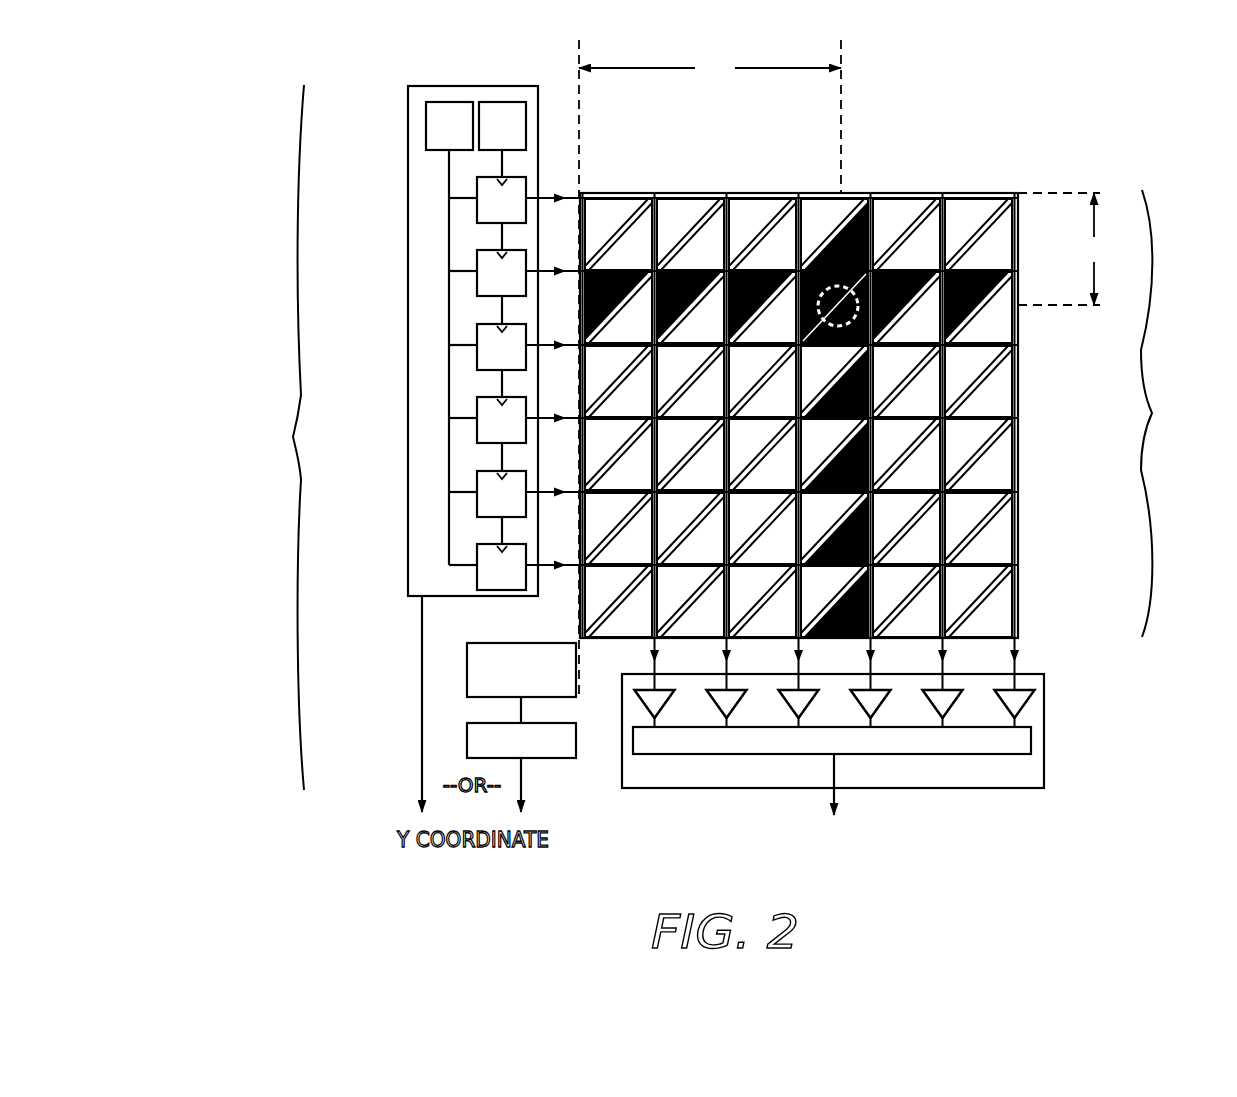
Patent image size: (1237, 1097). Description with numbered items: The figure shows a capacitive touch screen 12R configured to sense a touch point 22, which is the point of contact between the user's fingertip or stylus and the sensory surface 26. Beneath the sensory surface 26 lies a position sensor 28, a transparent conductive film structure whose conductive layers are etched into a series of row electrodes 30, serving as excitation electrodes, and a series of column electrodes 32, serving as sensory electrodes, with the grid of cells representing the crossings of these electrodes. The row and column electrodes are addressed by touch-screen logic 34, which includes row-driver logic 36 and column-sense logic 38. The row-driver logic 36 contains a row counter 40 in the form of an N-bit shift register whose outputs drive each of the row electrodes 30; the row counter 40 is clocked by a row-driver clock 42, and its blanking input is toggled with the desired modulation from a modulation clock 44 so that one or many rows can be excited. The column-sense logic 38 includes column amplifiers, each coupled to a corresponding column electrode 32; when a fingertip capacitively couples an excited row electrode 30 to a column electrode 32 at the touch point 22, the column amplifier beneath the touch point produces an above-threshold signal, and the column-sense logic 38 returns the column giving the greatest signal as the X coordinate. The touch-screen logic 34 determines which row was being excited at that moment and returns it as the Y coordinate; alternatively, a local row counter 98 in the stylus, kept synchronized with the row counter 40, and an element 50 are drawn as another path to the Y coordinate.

The touch screen 12R is at (863, 357).
The touch point 22 is at (843, 289).
The sensory surface 26 is at (1020, 600).
The position sensor 28 is at (1163, 413).
The row electrodes 30 is at (1028, 322).
The column electrodes 32 is at (826, 186).
The touch-screen logic 34 is at (284, 437).
The row-driver logic 36 is at (437, 449).
The column-sense logic 38 is at (1044, 732).
The row counter 40 is at (424, 542).
The row-driver clock 42 is at (502, 126).
The modulation clock 44 is at (449, 126).
The decoder 50 is at (521, 754).
The local row counter 98 is at (521, 670).